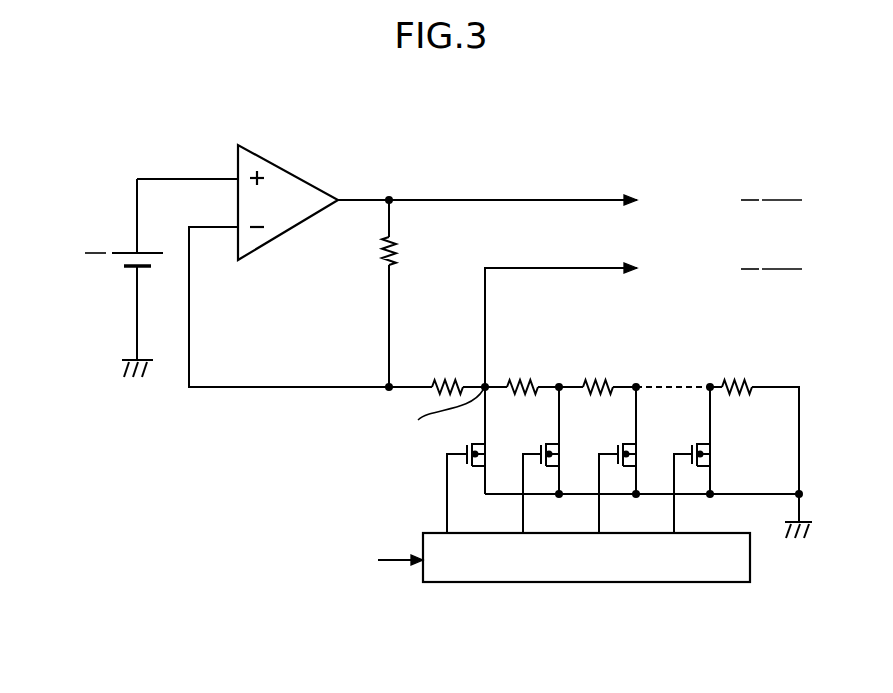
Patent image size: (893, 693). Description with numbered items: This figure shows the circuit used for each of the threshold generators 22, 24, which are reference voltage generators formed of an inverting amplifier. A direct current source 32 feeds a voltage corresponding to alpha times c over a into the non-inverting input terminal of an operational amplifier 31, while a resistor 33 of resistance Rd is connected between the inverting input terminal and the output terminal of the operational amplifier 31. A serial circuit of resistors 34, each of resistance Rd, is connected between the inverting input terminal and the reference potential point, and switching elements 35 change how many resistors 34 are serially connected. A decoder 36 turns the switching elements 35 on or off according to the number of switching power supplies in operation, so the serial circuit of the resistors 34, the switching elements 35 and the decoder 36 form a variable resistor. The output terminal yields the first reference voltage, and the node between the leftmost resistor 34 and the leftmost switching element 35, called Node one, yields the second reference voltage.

The threshold generator 22 is at (397, 142).
The threshold generator 24 is at (438, 142).
The operational amplifier 31 is at (298, 173).
The direct current source 32 is at (133, 247).
The resistor 33 is at (403, 240).
The resistors 34 is at (432, 380).
The switching elements 35 is at (461, 458).
The decoder 36 is at (717, 583).